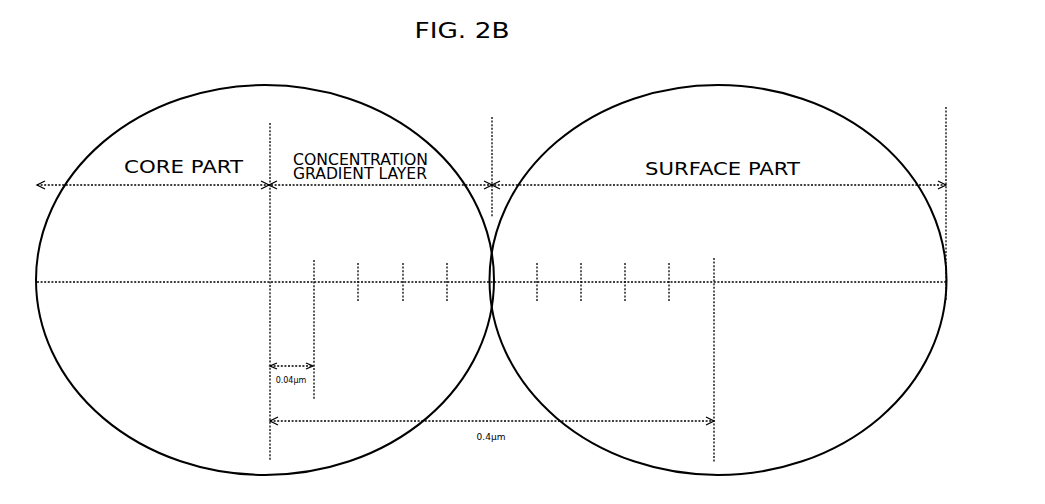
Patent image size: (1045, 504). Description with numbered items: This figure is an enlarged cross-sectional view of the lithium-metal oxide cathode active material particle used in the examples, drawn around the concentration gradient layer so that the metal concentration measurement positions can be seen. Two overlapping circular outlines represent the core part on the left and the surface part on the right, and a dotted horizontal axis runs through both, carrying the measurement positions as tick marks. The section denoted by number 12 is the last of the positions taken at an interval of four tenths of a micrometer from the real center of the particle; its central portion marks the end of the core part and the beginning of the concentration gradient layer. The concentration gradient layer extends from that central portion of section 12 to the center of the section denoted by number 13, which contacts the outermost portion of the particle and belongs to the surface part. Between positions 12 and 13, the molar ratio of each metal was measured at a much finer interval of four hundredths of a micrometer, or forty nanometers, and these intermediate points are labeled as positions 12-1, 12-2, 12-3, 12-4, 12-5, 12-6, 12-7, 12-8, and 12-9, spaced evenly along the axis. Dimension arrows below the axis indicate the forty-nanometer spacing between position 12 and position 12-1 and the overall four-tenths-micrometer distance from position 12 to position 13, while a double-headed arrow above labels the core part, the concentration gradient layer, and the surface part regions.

The section twelve / concentration measurement position twelve 12 is at (266, 291).
The concentration measurement position 12-1 is at (307, 319).
The concentration measurement position 12-2 is at (356, 294).
The concentration measurement position 12-3 is at (398, 269).
The concentration measurement position 12-4 is at (443, 294).
The concentration measurement position 12-5 is at (488, 186).
The concentration measurement position 12-6 is at (533, 294).
The concentration measurement position 12-7 is at (576, 269).
The concentration measurement position 12-8 is at (620, 294).
The concentration measurement position 12-9 is at (665, 269).
The section thirteen / concentration measurement position thirteen 13 is at (711, 360).